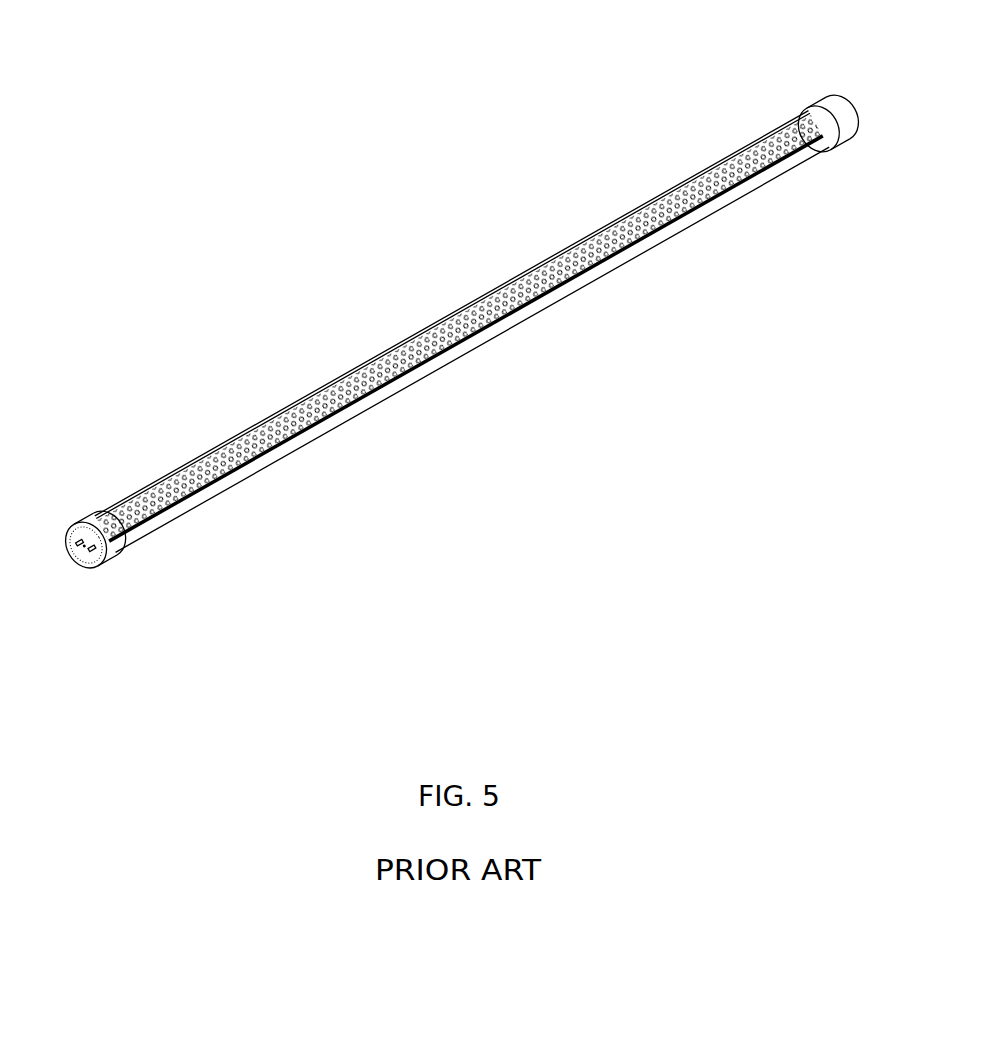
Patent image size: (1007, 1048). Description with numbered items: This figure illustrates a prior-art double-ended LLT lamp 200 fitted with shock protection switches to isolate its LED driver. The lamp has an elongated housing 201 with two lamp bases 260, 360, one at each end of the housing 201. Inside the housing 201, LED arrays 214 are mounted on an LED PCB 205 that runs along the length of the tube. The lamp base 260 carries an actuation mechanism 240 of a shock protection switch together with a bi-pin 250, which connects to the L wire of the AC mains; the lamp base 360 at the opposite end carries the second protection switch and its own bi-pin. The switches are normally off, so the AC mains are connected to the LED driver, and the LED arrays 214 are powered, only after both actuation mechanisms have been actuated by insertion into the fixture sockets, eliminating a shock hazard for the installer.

The LLT lamp 200 is at (453, 226).
The housing 201 is at (480, 335).
The LED PCB 205 is at (578, 238).
The LED arrays 214 is at (345, 378).
The actuation mechanism 240 is at (82, 557).
The bi-pin 250 is at (97, 560).
The lamp base 260 is at (93, 520).
The lamp base 360 is at (842, 140).